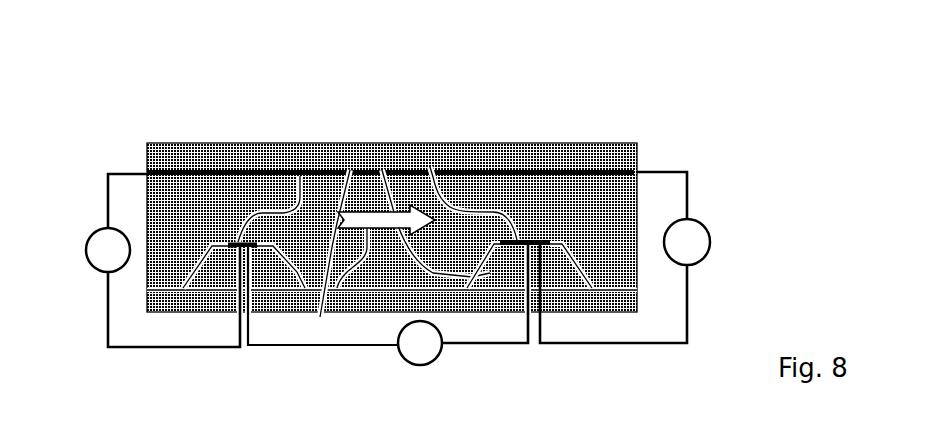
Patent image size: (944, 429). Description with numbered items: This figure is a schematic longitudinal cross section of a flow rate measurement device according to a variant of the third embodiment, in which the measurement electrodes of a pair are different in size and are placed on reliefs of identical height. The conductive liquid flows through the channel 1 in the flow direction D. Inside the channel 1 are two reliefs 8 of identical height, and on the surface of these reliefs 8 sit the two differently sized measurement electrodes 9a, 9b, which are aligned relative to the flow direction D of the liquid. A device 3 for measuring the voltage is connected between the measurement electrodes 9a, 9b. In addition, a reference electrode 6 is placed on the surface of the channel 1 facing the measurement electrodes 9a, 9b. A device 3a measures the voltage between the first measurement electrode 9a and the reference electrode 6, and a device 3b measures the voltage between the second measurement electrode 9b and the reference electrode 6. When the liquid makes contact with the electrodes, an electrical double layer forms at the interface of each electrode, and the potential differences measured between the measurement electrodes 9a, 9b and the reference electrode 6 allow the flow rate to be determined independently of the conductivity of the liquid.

The channel 1 is at (190, 222).
The device for measuring the voltage 3 is at (420, 365).
The device for measuring the voltage V1 3a is at (88, 259).
The device for measuring the voltage V2 3b is at (705, 256).
The reference electrode 6 is at (547, 165).
The reliefs 8 is at (382, 170).
The measurement electrode 9a is at (300, 176).
The measurement electrode 9b is at (430, 167).
The flow direction D is at (320, 317).